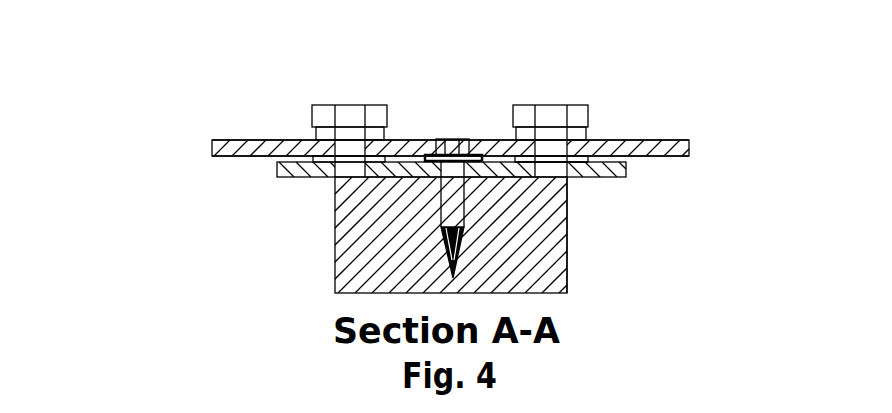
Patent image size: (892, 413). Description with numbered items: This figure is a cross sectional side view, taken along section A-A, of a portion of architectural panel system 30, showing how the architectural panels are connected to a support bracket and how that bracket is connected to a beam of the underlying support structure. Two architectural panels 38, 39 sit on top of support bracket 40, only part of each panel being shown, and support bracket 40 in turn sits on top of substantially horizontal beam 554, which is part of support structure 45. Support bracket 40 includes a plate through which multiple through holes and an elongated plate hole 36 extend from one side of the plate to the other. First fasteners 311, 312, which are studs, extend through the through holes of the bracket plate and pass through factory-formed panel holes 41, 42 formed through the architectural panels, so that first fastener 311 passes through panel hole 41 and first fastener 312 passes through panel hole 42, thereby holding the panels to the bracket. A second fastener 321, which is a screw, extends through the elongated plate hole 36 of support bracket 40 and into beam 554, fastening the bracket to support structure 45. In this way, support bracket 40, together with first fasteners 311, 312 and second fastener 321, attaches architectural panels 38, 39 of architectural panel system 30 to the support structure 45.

The architectural panel system 30 is at (202, 111).
The first fastener 311 is at (332, 100).
The first fastener 312 is at (572, 97).
The second fastener 321 is at (428, 207).
The plate hole 36 is at (522, 173).
The architectural panel 38 is at (208, 156).
The architectural panel 39 is at (692, 130).
The support bracket 40 is at (277, 178).
The panel hole 41 is at (373, 134).
The panel hole 42 is at (530, 136).
The support structure 45 is at (549, 209).
The beam 554 is at (583, 258).